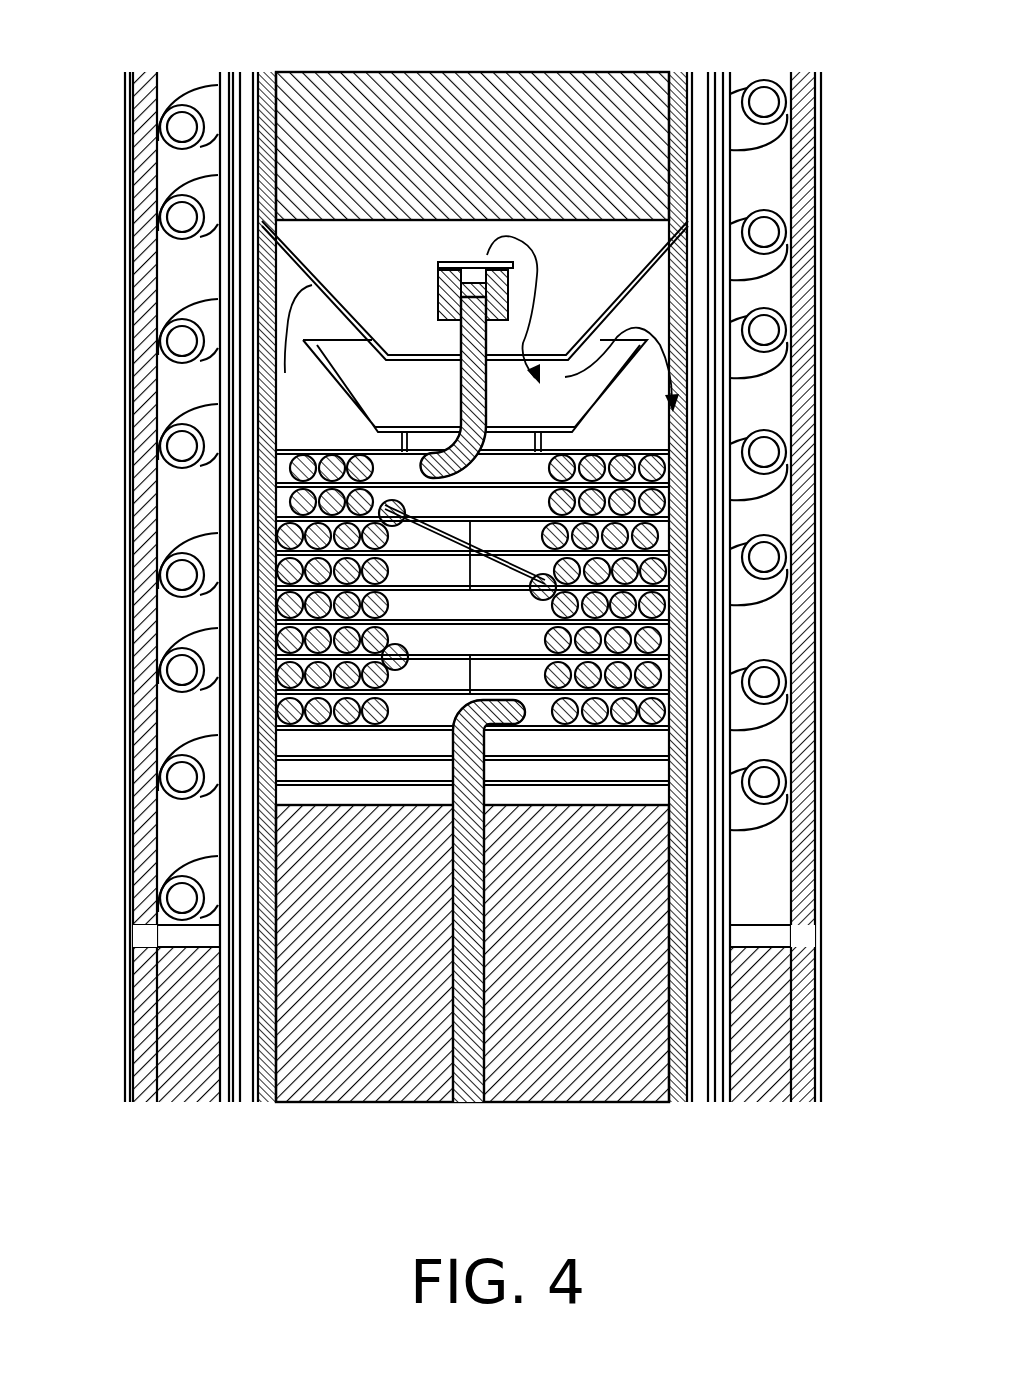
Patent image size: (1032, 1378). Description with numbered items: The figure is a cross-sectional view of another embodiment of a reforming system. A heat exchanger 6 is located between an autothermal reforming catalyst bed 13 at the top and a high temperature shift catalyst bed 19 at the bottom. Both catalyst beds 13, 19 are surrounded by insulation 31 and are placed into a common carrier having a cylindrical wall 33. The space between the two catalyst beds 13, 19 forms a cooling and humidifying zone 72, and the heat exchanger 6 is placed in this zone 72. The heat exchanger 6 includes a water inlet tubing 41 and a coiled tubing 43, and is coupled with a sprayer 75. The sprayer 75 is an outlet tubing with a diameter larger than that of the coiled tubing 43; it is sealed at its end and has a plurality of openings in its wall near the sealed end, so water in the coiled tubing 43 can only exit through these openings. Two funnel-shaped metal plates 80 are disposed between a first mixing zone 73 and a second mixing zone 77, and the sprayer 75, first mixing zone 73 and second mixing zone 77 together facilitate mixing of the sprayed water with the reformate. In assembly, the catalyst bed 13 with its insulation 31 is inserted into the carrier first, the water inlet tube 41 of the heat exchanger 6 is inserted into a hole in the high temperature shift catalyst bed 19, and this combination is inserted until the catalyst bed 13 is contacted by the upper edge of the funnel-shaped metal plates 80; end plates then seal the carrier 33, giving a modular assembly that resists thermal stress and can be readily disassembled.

The autothermal reforming catalyst bed 13 is at (445, 108).
The insulation 31 is at (679, 72).
The cylindrical wall 33 is at (703, 72).
The cooling and humidifying zone 72 is at (266, 314).
The first mixing zone 73 is at (600, 265).
The sprayer 75 is at (437, 266).
The second mixing zone 77 is at (668, 370).
The funnel-shaped metal plates 80 is at (347, 393).
The heat exchanger 6 is at (266, 604).
The coiled tubing 43 is at (266, 717).
The high temperature shift catalyst bed 19 is at (342, 1102).
The water inlet tubing 41 is at (467, 1102).